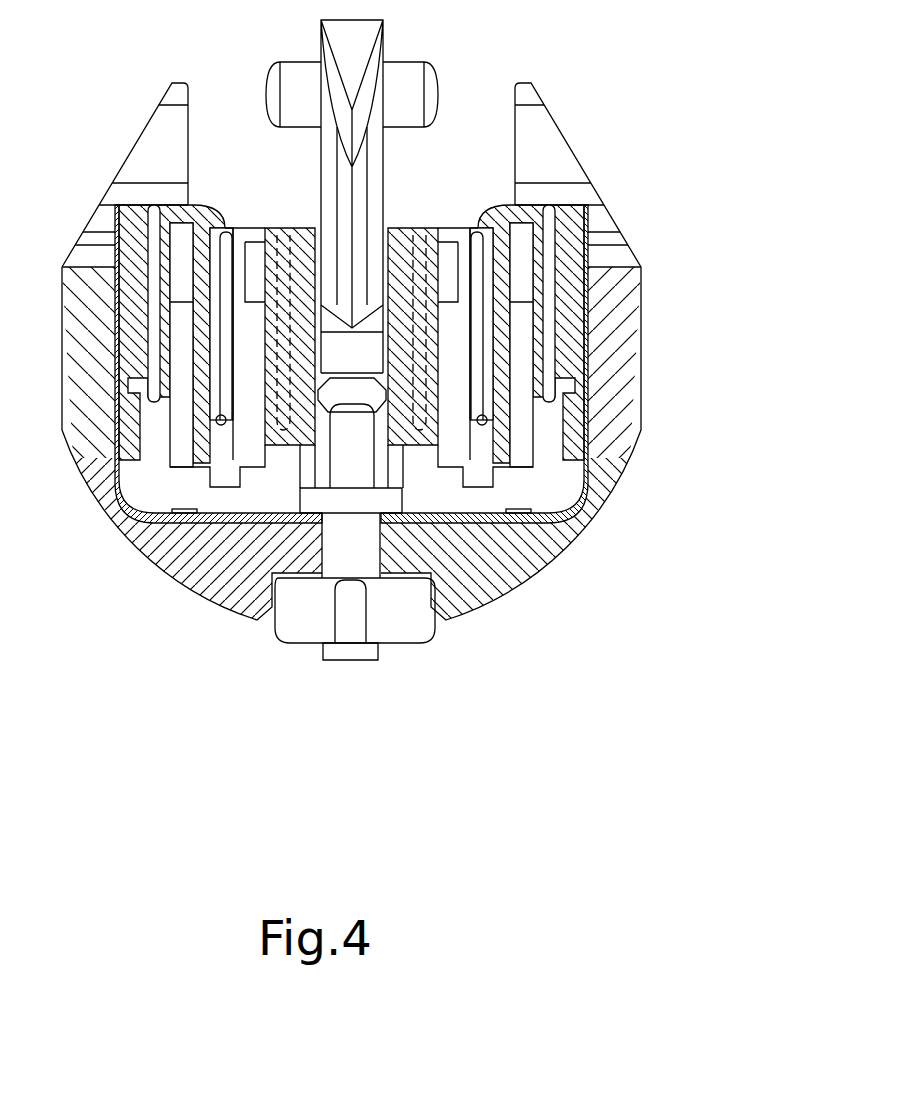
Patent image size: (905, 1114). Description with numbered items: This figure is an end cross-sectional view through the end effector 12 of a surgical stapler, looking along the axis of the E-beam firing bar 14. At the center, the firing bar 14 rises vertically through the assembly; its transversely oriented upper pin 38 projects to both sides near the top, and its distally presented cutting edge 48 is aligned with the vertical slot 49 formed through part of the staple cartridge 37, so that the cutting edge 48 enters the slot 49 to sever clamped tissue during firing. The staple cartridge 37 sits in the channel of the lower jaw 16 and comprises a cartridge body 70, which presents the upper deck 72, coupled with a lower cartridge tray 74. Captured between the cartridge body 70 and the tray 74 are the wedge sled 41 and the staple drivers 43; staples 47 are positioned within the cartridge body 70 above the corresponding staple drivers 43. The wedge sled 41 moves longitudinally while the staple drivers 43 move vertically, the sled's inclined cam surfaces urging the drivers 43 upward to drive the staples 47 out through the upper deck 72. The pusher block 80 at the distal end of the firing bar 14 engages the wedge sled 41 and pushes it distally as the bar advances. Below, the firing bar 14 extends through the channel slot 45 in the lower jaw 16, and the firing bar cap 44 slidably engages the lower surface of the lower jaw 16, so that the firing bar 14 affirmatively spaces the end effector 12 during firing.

The end effector 12 is at (641, 84).
The firing bar 14 is at (397, 160).
The lower jaw 16 is at (638, 480).
The staple cartridge 37 is at (260, 210).
The upper pin 38 is at (400, 75).
The wedge sled 41 is at (318, 552).
The staple drivers 43 is at (160, 490).
The firing bar cap 44 is at (293, 620).
The channel slot 45 is at (360, 502).
The staples 47 is at (548, 303).
The cutting edge 48 is at (360, 207).
The vertical slot 49 is at (322, 262).
The cartridge body 70 is at (572, 347).
The upper deck 72 is at (453, 228).
The cartridge tray 74 is at (583, 500).
The pusher block 80 is at (365, 474).